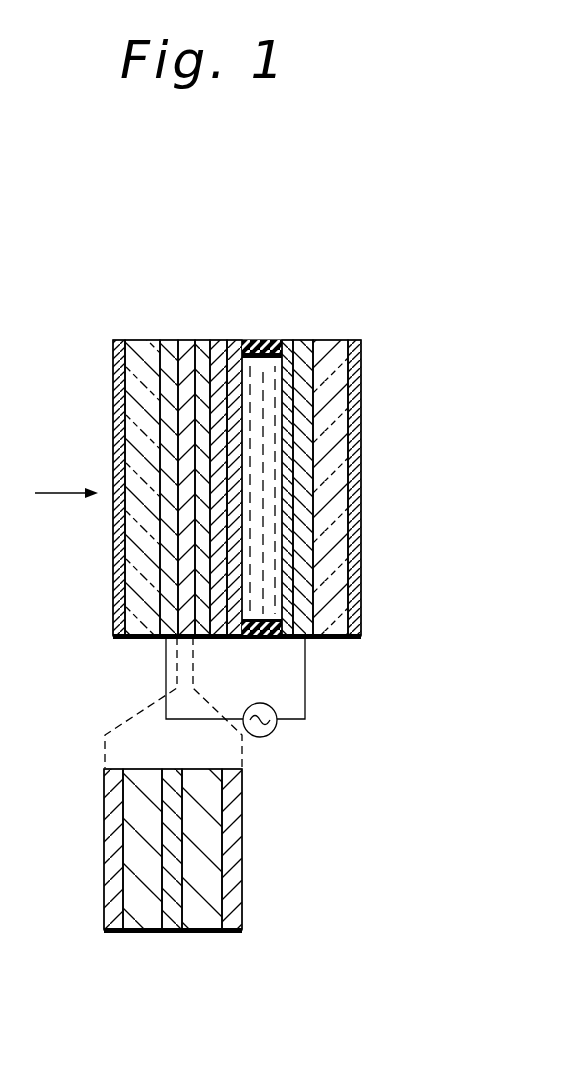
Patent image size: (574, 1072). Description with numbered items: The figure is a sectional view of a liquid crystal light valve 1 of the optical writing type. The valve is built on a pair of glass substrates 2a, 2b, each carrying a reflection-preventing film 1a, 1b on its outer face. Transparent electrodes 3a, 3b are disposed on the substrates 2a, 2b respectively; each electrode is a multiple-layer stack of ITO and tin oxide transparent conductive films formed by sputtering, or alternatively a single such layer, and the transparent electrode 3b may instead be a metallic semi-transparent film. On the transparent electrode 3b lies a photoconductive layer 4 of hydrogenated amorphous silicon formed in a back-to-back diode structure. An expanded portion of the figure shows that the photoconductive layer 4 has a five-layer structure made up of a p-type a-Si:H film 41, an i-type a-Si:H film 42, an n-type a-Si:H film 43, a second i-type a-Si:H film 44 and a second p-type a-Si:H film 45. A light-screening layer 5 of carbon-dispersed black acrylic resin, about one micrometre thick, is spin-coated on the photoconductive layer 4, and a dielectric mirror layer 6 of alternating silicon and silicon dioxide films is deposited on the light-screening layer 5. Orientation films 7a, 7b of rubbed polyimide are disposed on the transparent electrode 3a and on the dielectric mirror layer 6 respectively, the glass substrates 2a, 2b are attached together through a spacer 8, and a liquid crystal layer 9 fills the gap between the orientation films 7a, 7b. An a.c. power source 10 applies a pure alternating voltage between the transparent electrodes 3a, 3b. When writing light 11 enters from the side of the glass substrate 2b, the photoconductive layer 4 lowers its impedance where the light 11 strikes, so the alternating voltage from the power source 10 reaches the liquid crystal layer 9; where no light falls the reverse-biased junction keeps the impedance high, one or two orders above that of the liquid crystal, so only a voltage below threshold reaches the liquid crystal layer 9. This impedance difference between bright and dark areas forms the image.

The liquid crystal light valve 1 is at (366, 641).
The reflection-preventing film 1a is at (359, 340).
The reflection-preventing film 1b is at (113, 338).
The glass substrate 2a is at (335, 340).
The glass substrate 2b is at (140, 340).
The transparent electrode 3a is at (305, 340).
The transparent electrode 3b is at (168, 340).
The photoconductive layer 4 is at (187, 340).
The light-screening layer 5 is at (203, 340).
The dielectric mirror layer 6 is at (218, 340).
The orientation film 7a is at (287, 346).
The orientation film 7b is at (235, 346).
The spacer 8 is at (262, 340).
The liquid crystal layer 9 is at (268, 590).
The a.c. power source 10 is at (271, 737).
The light 11 is at (55, 493).
The p-type a-Si:H film 41 is at (103, 929).
The i-type a-Si:H film 42 is at (144, 931).
The n-type a-Si:H film 43 is at (168, 932).
The i-type a-Si:H film 44 is at (206, 930).
The p-type a-Si:H film 45 is at (241, 931).